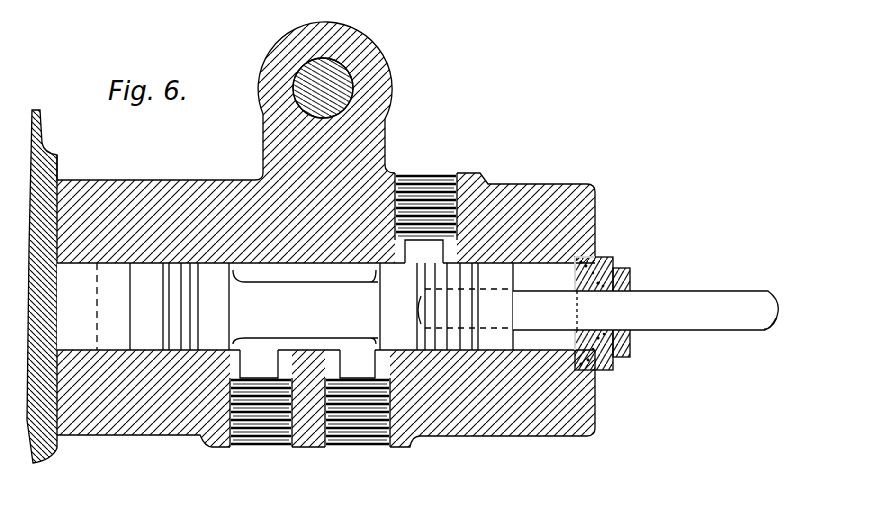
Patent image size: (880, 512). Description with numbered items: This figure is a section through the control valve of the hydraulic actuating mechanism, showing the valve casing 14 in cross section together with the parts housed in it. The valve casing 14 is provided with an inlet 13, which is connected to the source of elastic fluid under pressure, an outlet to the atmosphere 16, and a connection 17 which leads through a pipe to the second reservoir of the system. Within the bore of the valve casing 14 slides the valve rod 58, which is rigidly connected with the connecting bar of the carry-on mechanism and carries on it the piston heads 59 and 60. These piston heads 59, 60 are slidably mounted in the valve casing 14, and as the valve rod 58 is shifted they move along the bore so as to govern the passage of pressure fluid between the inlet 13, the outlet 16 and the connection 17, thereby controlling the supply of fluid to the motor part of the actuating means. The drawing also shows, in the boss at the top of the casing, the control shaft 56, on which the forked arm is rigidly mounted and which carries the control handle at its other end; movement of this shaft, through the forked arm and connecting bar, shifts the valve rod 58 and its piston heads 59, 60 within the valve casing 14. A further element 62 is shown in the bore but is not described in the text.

The inlet 13 is at (433, 183).
The valve casing 14 is at (592, 186).
The outlet to the atmosphere 16 is at (246, 442).
The connection 17 is at (365, 432).
The control shaft 56 is at (348, 80).
The valve rod 58 is at (710, 282).
The piston head 59 is at (502, 270).
The piston head 60 is at (150, 274).
The sleeve 62 is at (483, 275).